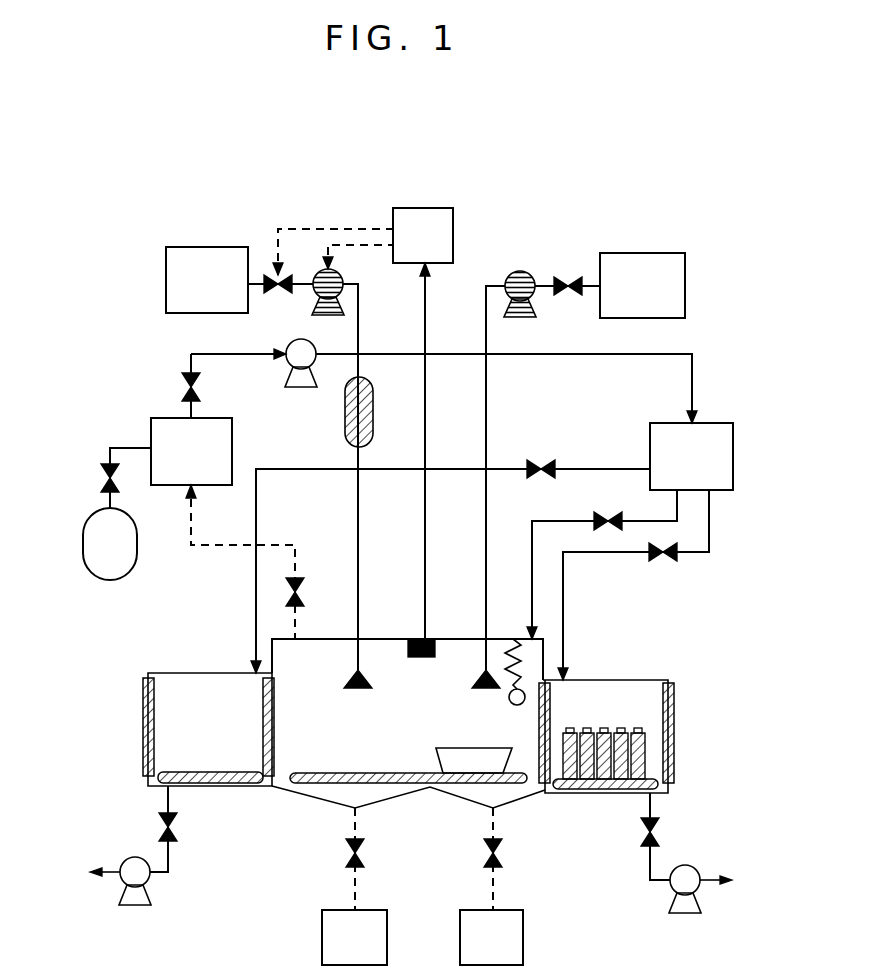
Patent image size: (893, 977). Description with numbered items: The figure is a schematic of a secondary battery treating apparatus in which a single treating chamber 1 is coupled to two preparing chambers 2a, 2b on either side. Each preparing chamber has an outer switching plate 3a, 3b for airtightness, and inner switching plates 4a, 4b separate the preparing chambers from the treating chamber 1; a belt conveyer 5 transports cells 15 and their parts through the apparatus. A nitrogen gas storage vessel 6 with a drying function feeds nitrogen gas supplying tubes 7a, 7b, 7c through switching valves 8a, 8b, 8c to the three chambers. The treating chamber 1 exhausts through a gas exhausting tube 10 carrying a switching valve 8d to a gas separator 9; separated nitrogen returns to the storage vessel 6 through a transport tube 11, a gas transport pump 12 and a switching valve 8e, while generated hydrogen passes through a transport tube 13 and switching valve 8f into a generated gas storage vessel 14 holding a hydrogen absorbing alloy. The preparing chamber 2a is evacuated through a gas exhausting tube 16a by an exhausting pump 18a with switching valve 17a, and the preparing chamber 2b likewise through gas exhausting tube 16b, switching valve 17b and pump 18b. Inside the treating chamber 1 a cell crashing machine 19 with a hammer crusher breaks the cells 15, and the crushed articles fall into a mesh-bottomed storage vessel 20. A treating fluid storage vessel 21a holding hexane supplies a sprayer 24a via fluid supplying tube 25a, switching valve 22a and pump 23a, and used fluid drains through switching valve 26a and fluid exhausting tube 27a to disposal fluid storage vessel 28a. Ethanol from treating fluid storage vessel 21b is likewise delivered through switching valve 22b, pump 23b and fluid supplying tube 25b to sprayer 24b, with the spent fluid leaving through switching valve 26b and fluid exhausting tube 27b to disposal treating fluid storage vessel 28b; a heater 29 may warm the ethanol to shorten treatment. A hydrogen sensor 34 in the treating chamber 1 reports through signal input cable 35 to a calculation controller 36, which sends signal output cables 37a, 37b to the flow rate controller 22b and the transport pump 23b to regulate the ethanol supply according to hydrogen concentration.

The treating chamber 1 is at (462, 639).
The preparing chamber 2a is at (666, 700).
The preparing chamber 2b is at (170, 677).
The switching plate 3a is at (676, 752).
The switching plate 3b is at (143, 725).
The switching plate 4a is at (560, 705).
The switching plate 4b is at (262, 702).
The belt conveyer 5 is at (190, 788).
The nitrogen gas storage vessel 6 is at (691, 456).
The nitrogen gas supplying tube 7a is at (709, 518).
The nitrogen gas supplying tube 7b is at (536, 592).
The nitrogen gas supplying tube 7c is at (614, 469).
The switching valve 8a is at (666, 560).
The switching valve 8b is at (608, 533).
The switching valve 8c is at (540, 460).
The switching valve 8d is at (302, 578).
The switching valve 8e is at (186, 382).
The switching valve 8f is at (101, 478).
The gas separator 9 is at (191, 451).
The gas exhausting tube 10 is at (226, 545).
The transport tube 11 is at (240, 357).
The gas transport pump 12 is at (305, 388).
The transport tube 13 is at (110, 448).
The generated gas storage vessel 14 is at (84, 530).
The cells 15 is at (612, 782).
The gas exhausting tube 16a is at (652, 800).
The gas exhausting tube 16b is at (160, 778).
The switching valve 17a is at (660, 835).
The switching valve 17b is at (158, 827).
The exhausting pump 18a is at (690, 912).
The pump 18b is at (140, 905).
The cell crashing machine 19 is at (512, 703).
The storage vessel 20 is at (474, 762).
The treating fluid storage vessel 21a is at (610, 285).
The treating fluid storage vessel 21b is at (239, 280).
The switching valve 22a is at (572, 275).
The switching valve 22b is at (276, 274).
The pump 23a is at (520, 270).
The treating fluid transport pump 23b is at (312, 302).
The sprayer 24a is at (480, 680).
The sprayer 24b is at (345, 695).
The fluid supplying tube 25a is at (488, 343).
The fluid supplying tube 25b is at (360, 318).
The switching valve 26a is at (486, 846).
The switching valve 26b is at (348, 846).
The fluid exhausting tube 27a is at (496, 878).
The fluid exhausting tube 27b is at (348, 886).
The disposal fluid storage vessel 28a is at (491, 937).
The disposal treating fluid storage vessel 28b is at (354, 937).
The heater 29 is at (375, 392).
The sensor 34 is at (410, 648).
The signal input cable 35 is at (426, 535).
The calculation controller 36 is at (423, 235).
The signal output cable 37a is at (280, 229).
The signal output cable 37b is at (362, 245).